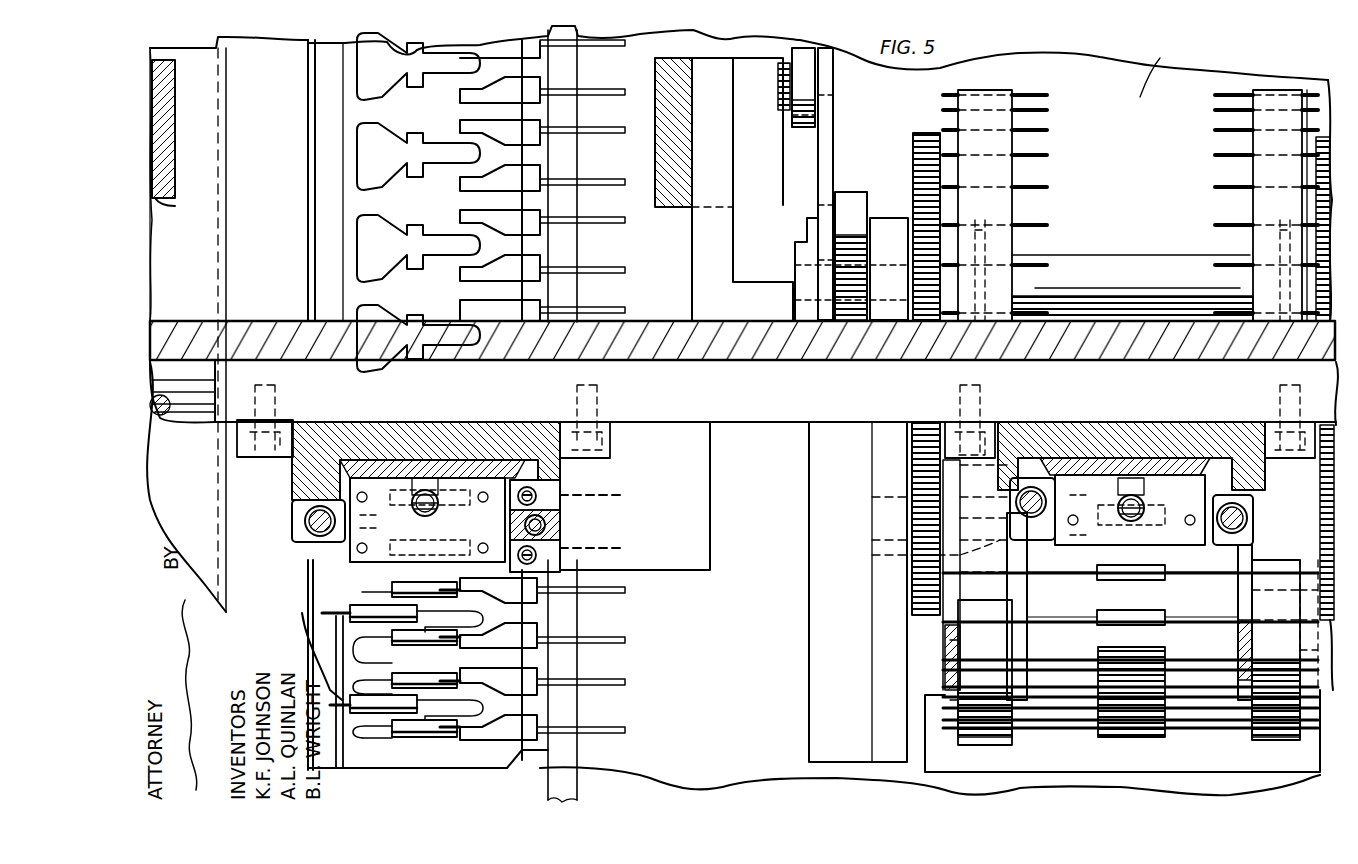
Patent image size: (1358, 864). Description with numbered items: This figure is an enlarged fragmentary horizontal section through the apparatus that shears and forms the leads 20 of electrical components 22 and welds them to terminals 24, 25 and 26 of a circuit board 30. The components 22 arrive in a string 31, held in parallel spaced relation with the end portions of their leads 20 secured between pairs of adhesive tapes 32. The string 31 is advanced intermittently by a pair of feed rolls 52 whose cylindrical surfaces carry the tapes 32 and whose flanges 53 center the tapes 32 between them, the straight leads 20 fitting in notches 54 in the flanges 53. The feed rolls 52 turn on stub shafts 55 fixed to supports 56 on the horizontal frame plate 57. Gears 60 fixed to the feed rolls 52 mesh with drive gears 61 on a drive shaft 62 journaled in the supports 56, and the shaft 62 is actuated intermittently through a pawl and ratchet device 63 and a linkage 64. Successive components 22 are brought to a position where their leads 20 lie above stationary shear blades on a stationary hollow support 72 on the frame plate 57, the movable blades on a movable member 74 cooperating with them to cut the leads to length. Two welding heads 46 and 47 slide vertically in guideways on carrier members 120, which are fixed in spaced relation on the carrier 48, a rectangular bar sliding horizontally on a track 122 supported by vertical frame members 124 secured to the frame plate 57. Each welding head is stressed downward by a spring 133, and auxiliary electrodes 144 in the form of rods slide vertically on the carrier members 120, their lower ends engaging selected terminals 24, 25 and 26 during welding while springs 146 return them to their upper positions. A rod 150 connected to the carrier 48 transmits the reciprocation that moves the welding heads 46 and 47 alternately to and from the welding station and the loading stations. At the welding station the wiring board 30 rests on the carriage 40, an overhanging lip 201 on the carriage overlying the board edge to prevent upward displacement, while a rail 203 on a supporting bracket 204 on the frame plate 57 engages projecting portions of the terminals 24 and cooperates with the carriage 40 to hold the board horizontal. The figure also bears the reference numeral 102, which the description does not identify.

The leads 20 is at (1030, 131).
The electrical components 22 is at (420, 640).
The terminals 24 is at (500, 85).
The terminals 25 is at (435, 60).
The terminals 26 is at (328, 50).
The circuit board 30 is at (270, 55).
The string 31 is at (963, 745).
The adhesive tapes 32 is at (990, 120).
The carriage 40 is at (200, 60).
The welding head 46 is at (1165, 465).
The welding head 47 is at (400, 505).
The carrier 48 is at (778, 405).
The feed rolls 52 is at (920, 640).
The flanges 53 is at (935, 690).
The notches 54 is at (935, 660).
The stub shafts 55 is at (872, 558).
The supports 56 is at (885, 230).
The horizontal frame plate 57 is at (800, 800).
The gears 60 is at (915, 620).
The drive gears 61 is at (925, 135).
The drive shaft 62 is at (1128, 278).
The pawl and ratchet device 63 is at (848, 240).
The linkage 64 is at (810, 85).
The stationary hollow support 72 is at (1055, 598).
The movable member 74 is at (1220, 592).
The holes 102 is at (490, 492).
The carrier members 120 is at (368, 445).
The track 122 is at (768, 338).
The vertical frame members 124 is at (182, 190).
The spring 133 is at (430, 490).
The auxiliary electrodes 144 is at (305, 527).
The springs 146 is at (305, 508).
The rod 150 is at (192, 388).
The overhanging lip 201 is at (225, 282).
The rail 203 is at (570, 243).
The supporting bracket 204 is at (670, 570).